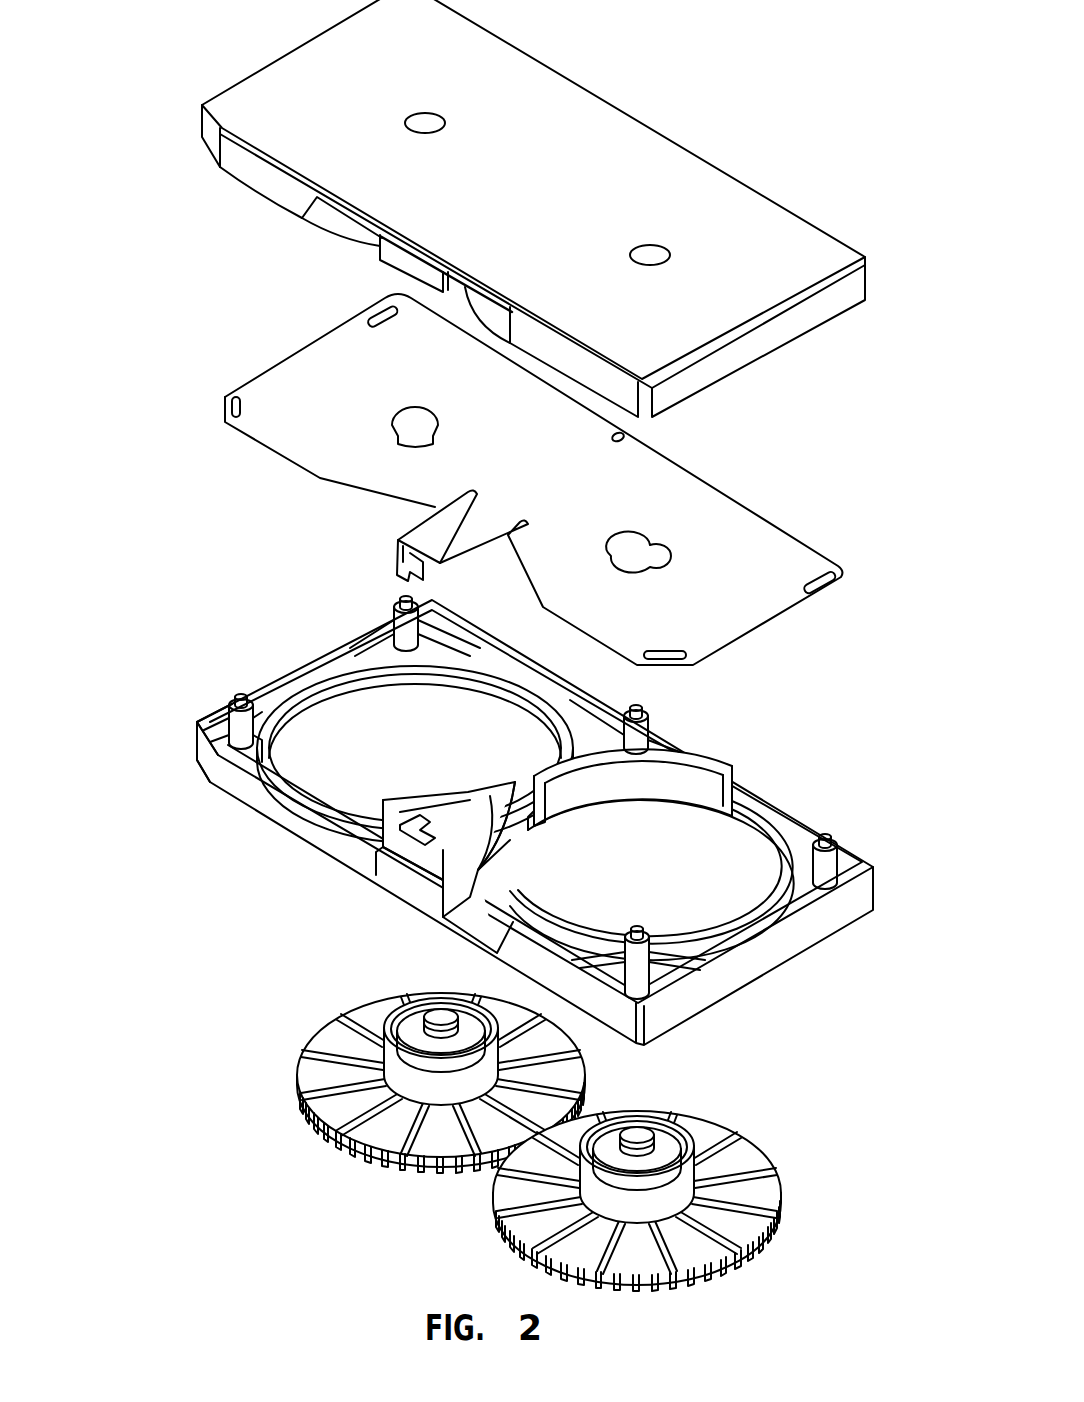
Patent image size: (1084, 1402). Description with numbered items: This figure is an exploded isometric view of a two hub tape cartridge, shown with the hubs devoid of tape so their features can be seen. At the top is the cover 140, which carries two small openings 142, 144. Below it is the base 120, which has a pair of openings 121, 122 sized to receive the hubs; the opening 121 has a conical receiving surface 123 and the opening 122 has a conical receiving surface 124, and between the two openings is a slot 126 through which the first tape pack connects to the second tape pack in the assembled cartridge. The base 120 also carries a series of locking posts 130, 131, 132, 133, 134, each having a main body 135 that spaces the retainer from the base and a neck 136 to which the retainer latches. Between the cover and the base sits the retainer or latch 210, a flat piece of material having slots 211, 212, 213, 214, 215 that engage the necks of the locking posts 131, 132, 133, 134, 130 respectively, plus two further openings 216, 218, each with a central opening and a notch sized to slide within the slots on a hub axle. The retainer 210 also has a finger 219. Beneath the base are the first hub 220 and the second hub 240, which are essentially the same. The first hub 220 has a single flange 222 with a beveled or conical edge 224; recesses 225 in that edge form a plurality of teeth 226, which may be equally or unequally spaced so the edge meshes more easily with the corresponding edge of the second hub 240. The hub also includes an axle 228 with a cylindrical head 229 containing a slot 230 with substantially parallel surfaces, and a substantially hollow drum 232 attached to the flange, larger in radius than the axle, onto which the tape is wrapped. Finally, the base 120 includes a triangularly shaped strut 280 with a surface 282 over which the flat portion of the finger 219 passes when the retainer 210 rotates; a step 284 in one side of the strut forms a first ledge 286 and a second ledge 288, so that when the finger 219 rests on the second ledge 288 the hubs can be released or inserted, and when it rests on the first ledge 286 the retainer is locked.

The base 120 is at (505, 814).
The opening 121 is at (292, 690).
The opening 122 is at (775, 815).
The conical receiving surface 123 is at (348, 685).
The conical receiving surface 124 is at (740, 790).
The slot 126 is at (572, 800).
The locking post 130 is at (210, 720).
The locking post 131 is at (653, 960).
The locking post 132 is at (837, 866).
The locking post 133 is at (650, 728).
The locking post 134 is at (392, 608).
The main body 135 is at (233, 745).
The neck 136 is at (225, 710).
The cover 140 is at (517, 208).
The cover hole 142 is at (650, 255).
The cover hole 144 is at (428, 118).
The retainer 210 is at (515, 490).
The slot 211 is at (680, 662).
The slot 212 is at (836, 575).
The slot 213 is at (626, 438).
The slot 214 is at (372, 314).
The slot 215 is at (230, 410).
The opening 216 is at (412, 410).
The opening 218 is at (632, 543).
The finger 219 is at (395, 545).
The first hub 220 is at (429, 1091).
The single flange 222 is at (333, 1118).
The beveled edge 224 is at (384, 1160).
The recesses 225 is at (422, 1172).
The teeth 226 is at (350, 1152).
The axle 228 is at (395, 1000).
The cylindrical head 229 is at (400, 1000).
The slot 230 is at (445, 1017).
The drum 232 is at (565, 1050).
The second hub 240 is at (780, 1182).
The triangularly shaped strut 280 is at (454, 840).
The surface 282 is at (432, 800).
The step 284 is at (427, 855).
The first ledge 286 is at (425, 808).
The second ledge 288 is at (490, 815).